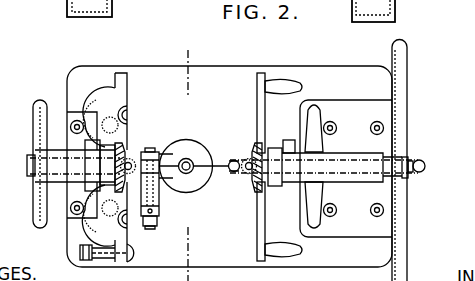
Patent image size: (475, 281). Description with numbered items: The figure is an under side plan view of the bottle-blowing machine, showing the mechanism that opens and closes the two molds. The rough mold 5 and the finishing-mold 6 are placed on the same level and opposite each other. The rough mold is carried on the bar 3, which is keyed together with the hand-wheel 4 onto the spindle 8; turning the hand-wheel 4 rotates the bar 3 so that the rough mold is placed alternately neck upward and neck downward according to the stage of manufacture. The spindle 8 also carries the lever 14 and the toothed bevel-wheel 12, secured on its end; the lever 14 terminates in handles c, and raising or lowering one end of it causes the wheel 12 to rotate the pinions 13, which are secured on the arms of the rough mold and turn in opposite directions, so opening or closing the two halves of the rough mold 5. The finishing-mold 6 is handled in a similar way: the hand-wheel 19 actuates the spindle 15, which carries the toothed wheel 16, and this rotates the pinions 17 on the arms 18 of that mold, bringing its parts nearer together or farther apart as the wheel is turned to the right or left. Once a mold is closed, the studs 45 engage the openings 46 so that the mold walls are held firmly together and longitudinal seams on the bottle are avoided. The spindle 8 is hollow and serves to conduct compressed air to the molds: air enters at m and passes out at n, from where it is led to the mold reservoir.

The bar 3 is at (193, 165).
The hand-wheel 4 is at (399, 161).
The rough mold 5 is at (195, 166).
The finishing-mold 6 is at (128, 112).
The spindle 8 is at (405, 157).
The toothed bevel-wheel 12 is at (250, 158).
The pinions 13 is at (232, 161).
The lever 14 is at (262, 110).
The spindle 15 is at (62, 166).
The toothed wheel 16 is at (131, 151).
The pinions 17 is at (153, 152).
The arms 18 is at (127, 140).
The hand-wheel 19 is at (38, 193).
The studs 45 is at (133, 249).
The openings 46 is at (127, 79).
The handles c is at (283, 168).
The air inlet m is at (425, 166).
The air outlet n is at (289, 141).